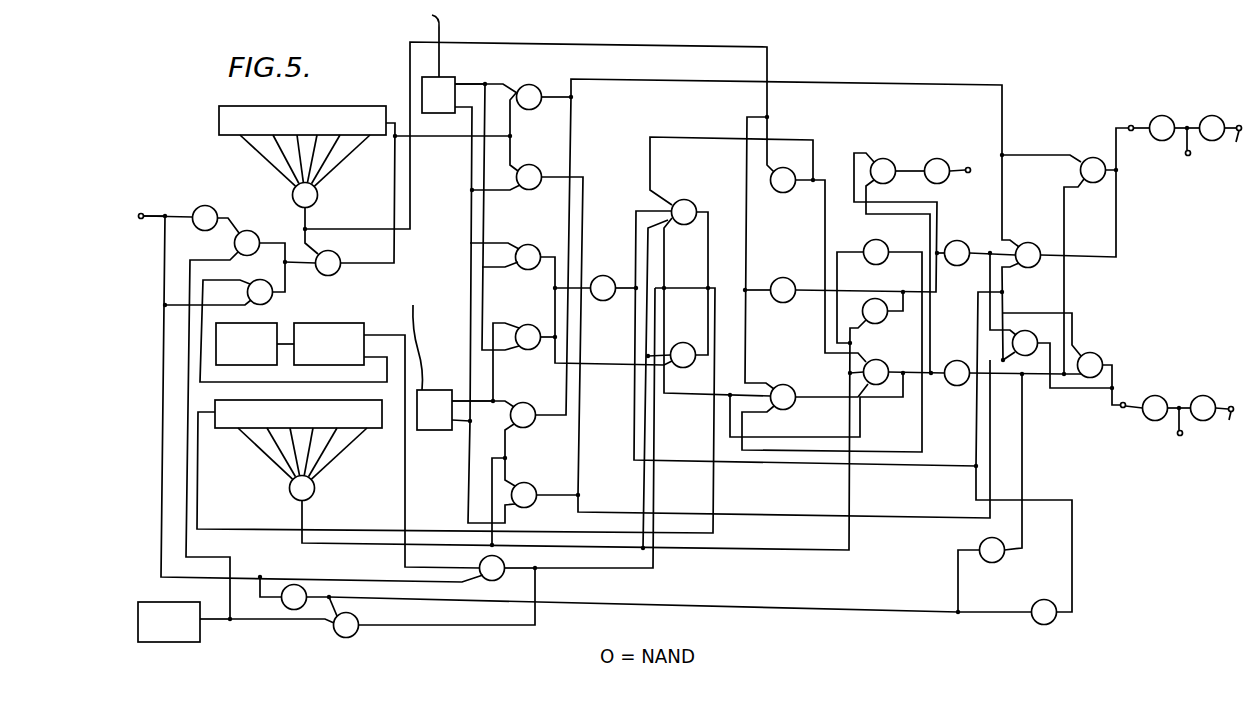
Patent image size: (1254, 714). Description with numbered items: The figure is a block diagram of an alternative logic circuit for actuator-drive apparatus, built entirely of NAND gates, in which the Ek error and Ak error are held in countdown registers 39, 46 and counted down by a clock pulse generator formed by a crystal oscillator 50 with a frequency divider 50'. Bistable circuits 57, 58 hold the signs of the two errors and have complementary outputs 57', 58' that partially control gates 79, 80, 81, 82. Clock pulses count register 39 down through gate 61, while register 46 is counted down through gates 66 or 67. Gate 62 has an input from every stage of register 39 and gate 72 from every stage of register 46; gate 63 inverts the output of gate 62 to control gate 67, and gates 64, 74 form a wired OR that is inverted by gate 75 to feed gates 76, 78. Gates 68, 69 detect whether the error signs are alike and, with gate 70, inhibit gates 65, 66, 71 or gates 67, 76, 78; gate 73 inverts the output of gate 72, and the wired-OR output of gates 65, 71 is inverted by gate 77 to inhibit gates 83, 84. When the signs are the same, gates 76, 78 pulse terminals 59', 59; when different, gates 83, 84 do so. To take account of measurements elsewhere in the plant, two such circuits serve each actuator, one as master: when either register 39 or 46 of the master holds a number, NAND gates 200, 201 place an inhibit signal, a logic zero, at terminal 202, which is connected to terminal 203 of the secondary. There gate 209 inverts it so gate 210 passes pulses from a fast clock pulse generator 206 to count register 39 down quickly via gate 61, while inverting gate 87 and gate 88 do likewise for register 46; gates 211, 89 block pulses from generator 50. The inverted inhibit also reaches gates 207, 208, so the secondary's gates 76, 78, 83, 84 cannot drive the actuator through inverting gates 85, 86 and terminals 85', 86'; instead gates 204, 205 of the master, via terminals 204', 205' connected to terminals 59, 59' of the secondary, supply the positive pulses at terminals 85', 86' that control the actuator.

The countdown register 39 is at (302, 109).
The countdown register 46 is at (298, 405).
The crystal oscillator 50 is at (248, 356).
The frequency divider 50' is at (338, 334).
The bistable circuit 57 is at (392, 71).
The bistable output 57' is at (475, 71).
The bistable circuit 58 is at (420, 357).
The bistable output 58' is at (464, 373).
The terminal 59 is at (1124, 116).
The terminal 59' is at (1111, 422).
The gate 61 is at (342, 277).
The gate 62 is at (305, 176).
The gate 63 is at (789, 191).
The gate 64 is at (789, 278).
The gate 65 is at (789, 385).
The gate 66 is at (686, 346).
The gate 67 is at (688, 223).
The gate 68 is at (533, 246).
The gate 69 is at (531, 326).
The gate 70 is at (609, 279).
The gate 71 is at (890, 365).
The gate 72 is at (302, 470).
The gate 73 is at (886, 244).
The gate 74 is at (883, 323).
The gate 75 is at (964, 244).
The gate 76 is at (1035, 334).
The gate 77 is at (960, 390).
The gate 78 is at (1037, 245).
The gate 79 is at (542, 88).
The gate 80 is at (536, 168).
The gate 81 is at (531, 406).
The gate 82 is at (532, 488).
The gate 83 is at (1091, 160).
The gate 84 is at (1093, 354).
The inverting gate 85 is at (1166, 117).
The terminal 85' is at (1178, 167).
The inverting gate 86 is at (1154, 395).
The terminal 86' is at (1162, 446).
The inverting gate 87 is at (301, 583).
The gate 88 is at (361, 619).
The gate 89 is at (506, 577).
The NAND gate 200 is at (897, 160).
The NAND gate 201 is at (948, 160).
The terminal 202 is at (980, 160).
The terminal 203 is at (146, 204).
The gate 204 is at (1216, 117).
The terminal 204' is at (1232, 145).
The gate 205 is at (1206, 395).
The terminal 205' is at (1230, 424).
The fast clock pulse generator 206 is at (190, 628).
The gate 207 is at (973, 542).
The gate 208 is at (1034, 597).
The gate 209 is at (213, 207).
The gate 210 is at (265, 233).
The gate 211 is at (280, 299).